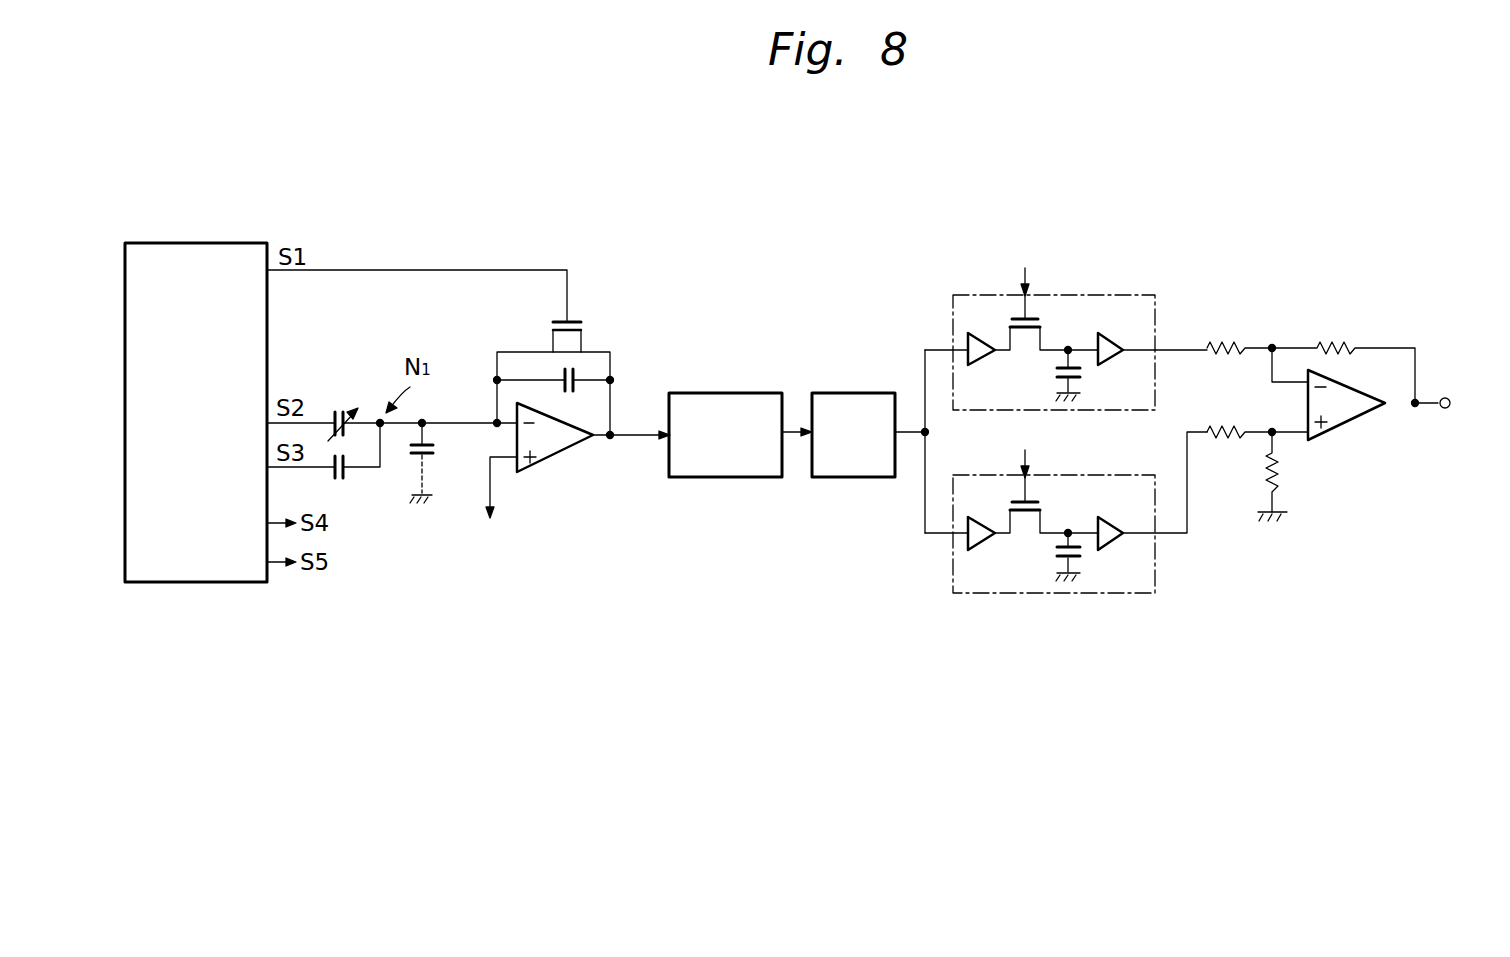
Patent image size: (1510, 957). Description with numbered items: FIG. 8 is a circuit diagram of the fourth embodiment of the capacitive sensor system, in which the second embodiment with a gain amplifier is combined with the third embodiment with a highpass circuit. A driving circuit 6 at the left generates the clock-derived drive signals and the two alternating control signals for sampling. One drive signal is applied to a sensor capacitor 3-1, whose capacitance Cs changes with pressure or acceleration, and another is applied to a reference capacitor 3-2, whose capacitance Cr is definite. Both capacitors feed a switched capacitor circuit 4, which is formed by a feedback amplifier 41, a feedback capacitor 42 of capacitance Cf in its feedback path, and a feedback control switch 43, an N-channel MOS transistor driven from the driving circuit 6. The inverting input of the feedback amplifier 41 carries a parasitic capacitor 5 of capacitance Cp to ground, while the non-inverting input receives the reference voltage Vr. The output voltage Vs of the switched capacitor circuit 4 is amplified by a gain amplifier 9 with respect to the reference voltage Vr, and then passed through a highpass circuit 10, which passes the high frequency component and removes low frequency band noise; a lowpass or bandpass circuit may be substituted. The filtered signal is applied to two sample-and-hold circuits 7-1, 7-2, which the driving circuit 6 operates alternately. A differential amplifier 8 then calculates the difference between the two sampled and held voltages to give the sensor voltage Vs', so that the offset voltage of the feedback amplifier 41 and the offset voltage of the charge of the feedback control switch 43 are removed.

The driving circuit 6 is at (186, 242).
The sensor capacitor 3-1 is at (342, 410).
The reference capacitor 3-2 is at (330, 477).
The parasitic capacitor 5 is at (434, 452).
The switched capacitor circuit 4 is at (574, 449).
The feedback amplifier 41 is at (565, 456).
The feedback capacitor 42 is at (585, 372).
The feedback control switch 43 is at (583, 316).
The gain amplifier 9 is at (734, 392).
The highpass circuit 10 is at (852, 392).
The sample-and-hold circuit 7-1 is at (1115, 295).
The sample-and-hold circuit 7-2 is at (1103, 474).
The differential amplifier 8 is at (1330, 453).